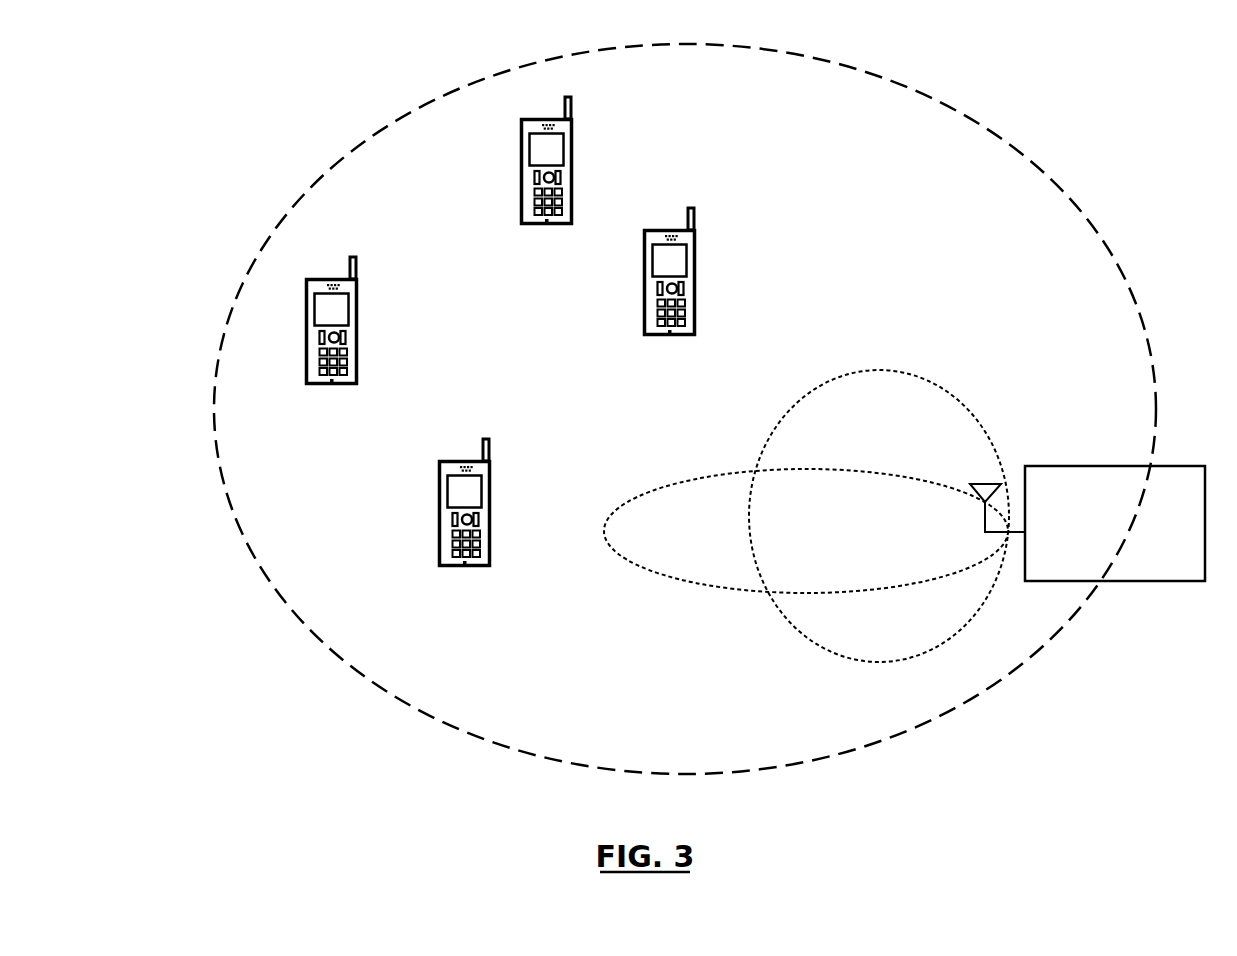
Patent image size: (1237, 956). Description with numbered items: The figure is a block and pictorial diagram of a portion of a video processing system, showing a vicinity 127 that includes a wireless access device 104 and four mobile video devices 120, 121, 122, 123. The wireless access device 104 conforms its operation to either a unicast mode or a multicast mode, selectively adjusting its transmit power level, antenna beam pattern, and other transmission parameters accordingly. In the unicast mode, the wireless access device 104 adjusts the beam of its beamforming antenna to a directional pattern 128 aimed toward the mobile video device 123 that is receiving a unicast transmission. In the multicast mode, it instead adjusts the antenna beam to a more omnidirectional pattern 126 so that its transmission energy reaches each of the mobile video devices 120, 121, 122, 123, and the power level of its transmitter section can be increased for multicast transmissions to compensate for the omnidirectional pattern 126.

The wireless access device 104 is at (1087, 523).
The mobile video device 120 is at (315, 411).
The mobile video device 121 is at (527, 251).
The mobile video device 122 is at (649, 362).
The mobile video device 123 is at (446, 592).
The omnidirectional pattern 126 is at (962, 401).
The vicinity 127 is at (222, 482).
The directional pattern 128 is at (713, 587).